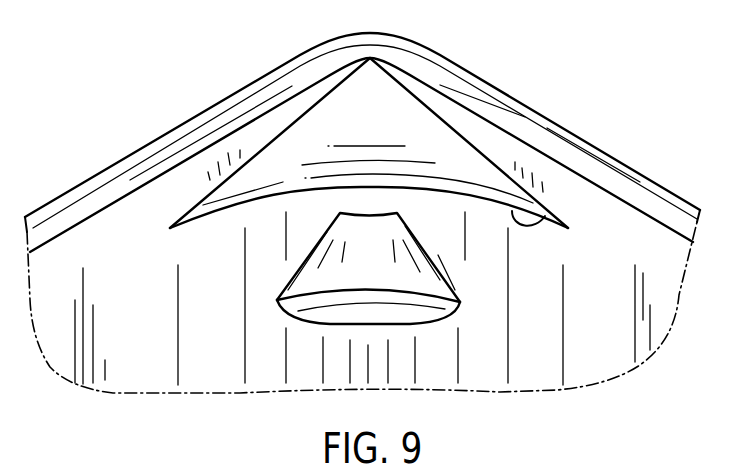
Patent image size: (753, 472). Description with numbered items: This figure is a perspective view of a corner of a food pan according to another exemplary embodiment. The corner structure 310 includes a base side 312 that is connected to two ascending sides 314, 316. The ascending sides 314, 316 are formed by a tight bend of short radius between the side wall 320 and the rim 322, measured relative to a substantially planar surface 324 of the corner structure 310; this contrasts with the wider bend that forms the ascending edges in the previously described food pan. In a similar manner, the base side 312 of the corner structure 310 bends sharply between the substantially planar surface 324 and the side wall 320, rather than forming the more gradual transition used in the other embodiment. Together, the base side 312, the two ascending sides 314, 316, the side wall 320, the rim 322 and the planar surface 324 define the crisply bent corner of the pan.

The corner structure 310 is at (548, 50).
The base side 312 is at (545, 217).
The ascending side 314 is at (292, 120).
The ascending side 316 is at (448, 118).
The side wall 320 is at (155, 342).
The rim 322 is at (112, 178).
The substantially planar surface 324 is at (388, 126).